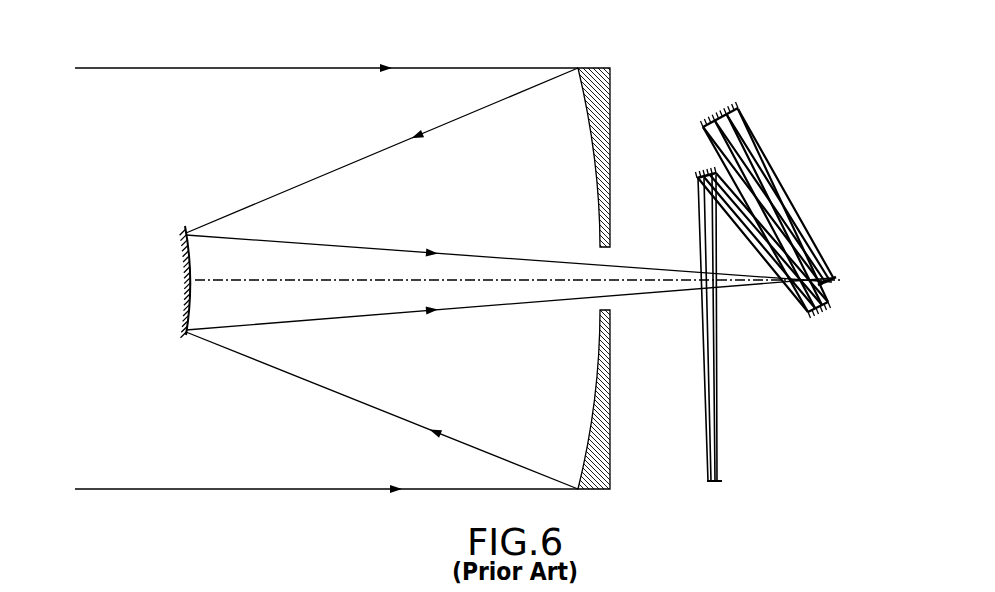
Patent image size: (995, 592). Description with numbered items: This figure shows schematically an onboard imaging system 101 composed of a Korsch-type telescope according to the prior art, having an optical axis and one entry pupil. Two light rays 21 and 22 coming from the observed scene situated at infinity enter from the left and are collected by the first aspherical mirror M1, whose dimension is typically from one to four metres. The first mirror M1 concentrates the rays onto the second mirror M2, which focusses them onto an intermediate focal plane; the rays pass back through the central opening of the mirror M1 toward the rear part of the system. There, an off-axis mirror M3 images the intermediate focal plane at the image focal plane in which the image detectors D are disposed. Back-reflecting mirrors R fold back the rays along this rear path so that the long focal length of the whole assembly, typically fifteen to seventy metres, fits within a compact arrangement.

The light ray 21 is at (200, 67).
The light ray 22 is at (190, 488).
The first aspherical mirror M1 is at (611, 455).
The second mirror M2 is at (185, 226).
The off-axis mirror M3 is at (738, 106).
The back-reflecting mirror R is at (700, 168).
The image detector D is at (722, 482).
The imaging system 101 is at (307, 590).